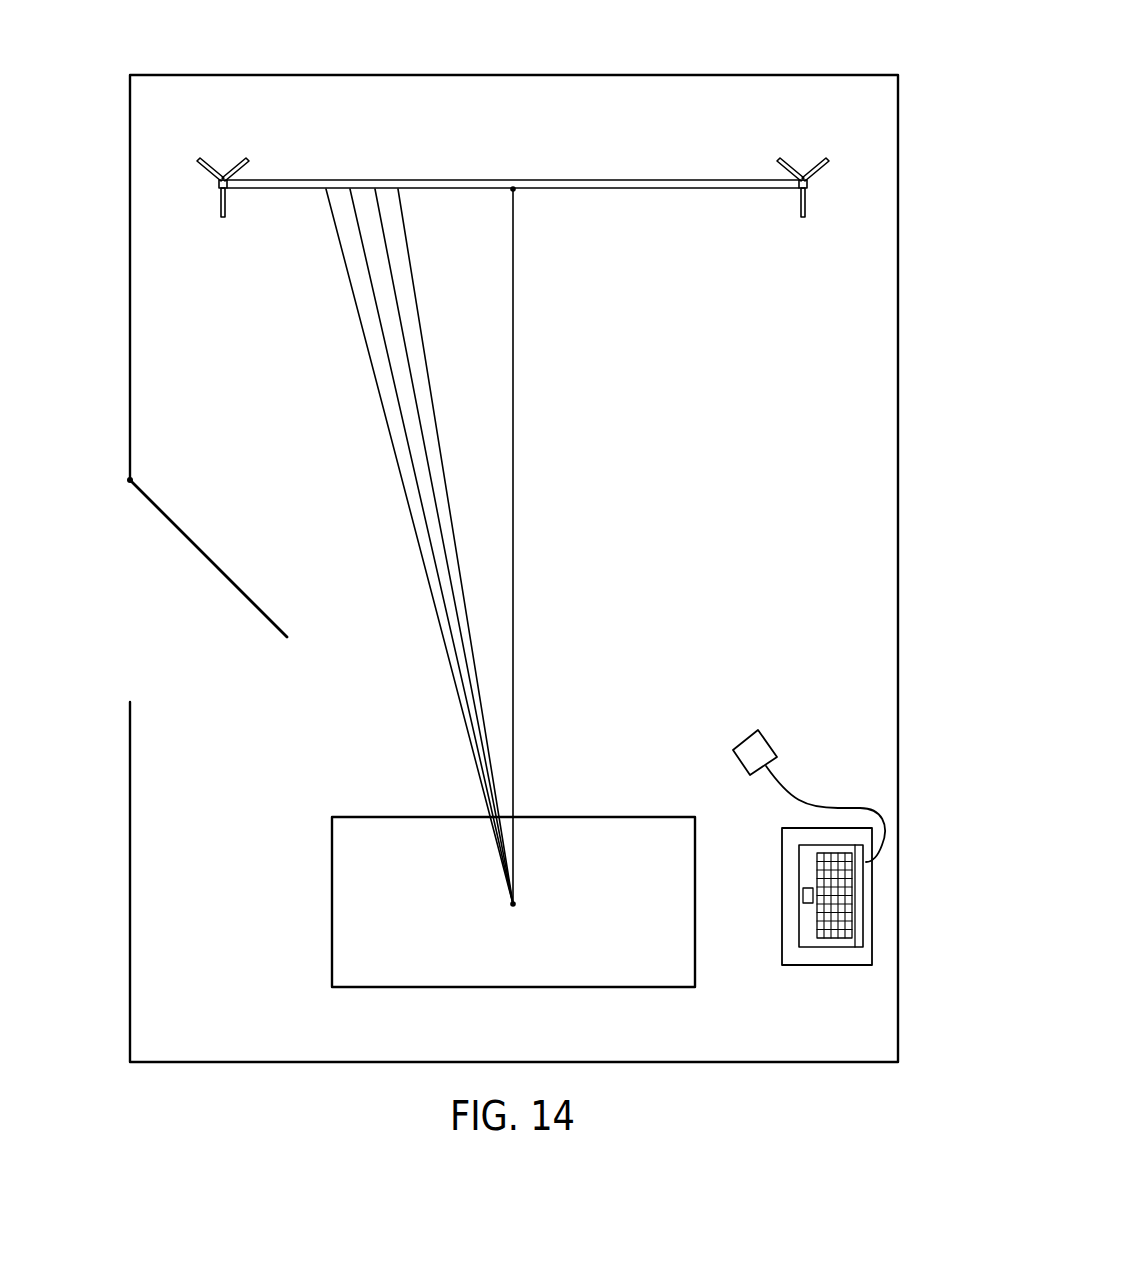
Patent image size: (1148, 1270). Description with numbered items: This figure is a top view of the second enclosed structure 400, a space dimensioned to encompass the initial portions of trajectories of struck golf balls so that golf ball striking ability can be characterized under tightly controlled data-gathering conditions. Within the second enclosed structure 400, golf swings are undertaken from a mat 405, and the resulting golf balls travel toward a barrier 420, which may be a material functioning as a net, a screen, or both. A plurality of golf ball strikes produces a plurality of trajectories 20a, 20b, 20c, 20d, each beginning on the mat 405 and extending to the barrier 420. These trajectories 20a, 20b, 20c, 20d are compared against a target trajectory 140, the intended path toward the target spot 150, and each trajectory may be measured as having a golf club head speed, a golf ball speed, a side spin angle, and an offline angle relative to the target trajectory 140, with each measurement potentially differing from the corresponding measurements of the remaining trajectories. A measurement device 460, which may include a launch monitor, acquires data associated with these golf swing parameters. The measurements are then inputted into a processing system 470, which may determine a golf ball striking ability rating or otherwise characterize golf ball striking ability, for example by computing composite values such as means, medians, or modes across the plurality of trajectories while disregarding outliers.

The second enclosed structure 400 is at (806, 74).
The barrier 420 is at (628, 180).
The target spot 150 is at (513, 188).
The target trajectory 140 is at (513, 393).
The trajectory 20a is at (335, 232).
The trajectory 20b is at (367, 263).
The trajectory 20c is at (387, 243).
The trajectory 20d is at (413, 273).
The mat 405 is at (695, 971).
The measurement device 460 is at (764, 737).
The processing system 470 is at (833, 947).